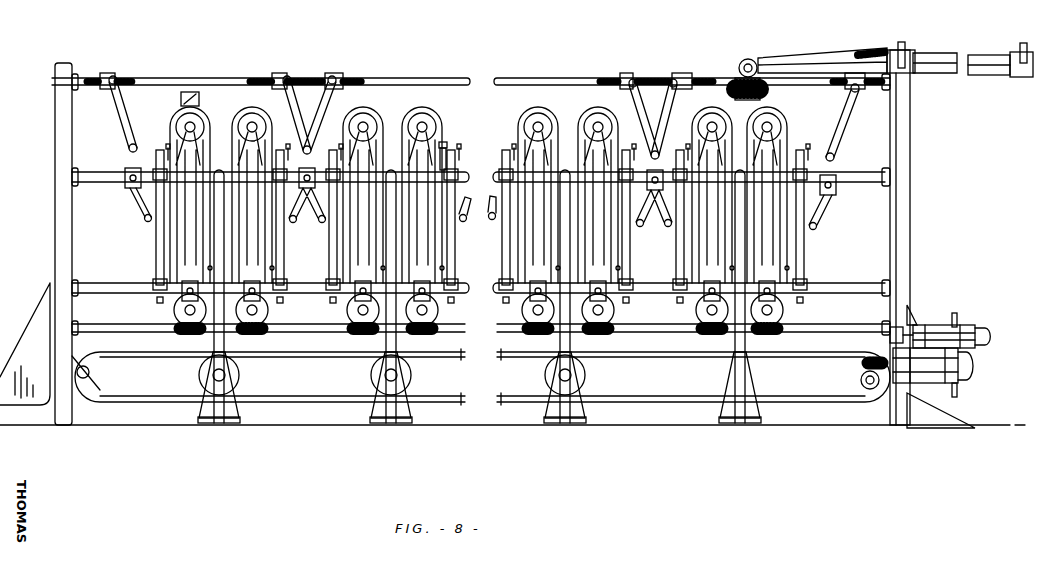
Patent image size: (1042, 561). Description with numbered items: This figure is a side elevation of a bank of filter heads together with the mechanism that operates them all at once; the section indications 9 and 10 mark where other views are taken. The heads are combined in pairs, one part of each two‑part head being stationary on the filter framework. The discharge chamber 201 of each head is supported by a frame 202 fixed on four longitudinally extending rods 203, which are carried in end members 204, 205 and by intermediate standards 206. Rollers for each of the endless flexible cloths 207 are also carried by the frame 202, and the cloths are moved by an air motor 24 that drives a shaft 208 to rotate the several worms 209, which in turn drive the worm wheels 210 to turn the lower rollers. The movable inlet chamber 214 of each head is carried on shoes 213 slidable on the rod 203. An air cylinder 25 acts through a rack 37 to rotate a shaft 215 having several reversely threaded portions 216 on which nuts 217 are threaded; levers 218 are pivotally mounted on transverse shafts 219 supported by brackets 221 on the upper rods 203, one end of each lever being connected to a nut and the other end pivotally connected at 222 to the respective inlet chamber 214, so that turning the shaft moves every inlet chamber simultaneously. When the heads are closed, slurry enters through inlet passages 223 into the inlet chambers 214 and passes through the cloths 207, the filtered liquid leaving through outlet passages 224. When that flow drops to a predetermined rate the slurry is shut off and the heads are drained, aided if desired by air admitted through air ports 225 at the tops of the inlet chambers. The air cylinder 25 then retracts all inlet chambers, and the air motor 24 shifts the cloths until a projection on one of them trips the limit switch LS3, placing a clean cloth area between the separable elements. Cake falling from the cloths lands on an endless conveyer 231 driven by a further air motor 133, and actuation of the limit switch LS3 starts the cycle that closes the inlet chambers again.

The end member 204 is at (55, 252).
The end member 205 is at (903, 240).
The endless conveyer 231 is at (836, 425).
The reversely threaded portions 216 is at (302, 78).
The nuts 217 is at (276, 78).
The levers 218 is at (127, 108).
The shafts 219 is at (129, 148).
The brackets 221 is at (836, 170).
The pivotal connection 222 is at (144, 218).
The endless flexible cloths 207 is at (388, 120).
The discharge chamber 201 is at (204, 126).
The limit switch LS3 is at (190, 92).
The longitudinally extending rods 203 is at (843, 187).
The frame 202 is at (172, 292).
The inlet chamber 214 is at (158, 245).
The shoes 213 is at (153, 280).
The air ports 225 is at (446, 142).
The inlet passages 223 is at (330, 303).
The outlet passages 224 is at (410, 268).
The worm wheels 210 is at (700, 332).
The shaft 208 is at (850, 333).
The worms 209 is at (775, 353).
The intermediate standards 206 is at (212, 402).
The shaft 215 is at (736, 84).
The rack 37 is at (775, 62).
The air cylinder 25 is at (982, 57).
The air motor 24 is at (953, 328).
The air motor 133 is at (958, 390).
The section line 9 is at (348, 47).
The section line 10 is at (399, 60).